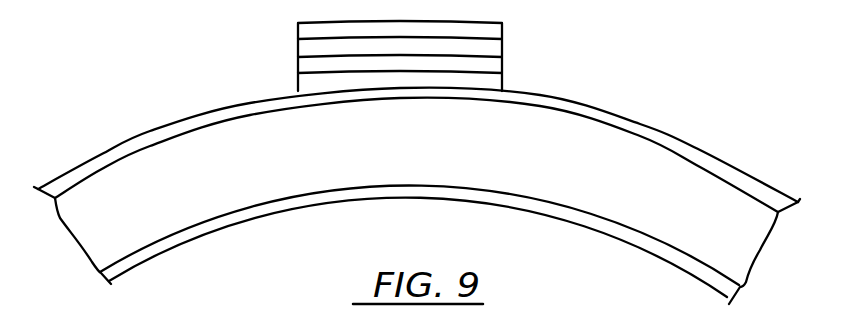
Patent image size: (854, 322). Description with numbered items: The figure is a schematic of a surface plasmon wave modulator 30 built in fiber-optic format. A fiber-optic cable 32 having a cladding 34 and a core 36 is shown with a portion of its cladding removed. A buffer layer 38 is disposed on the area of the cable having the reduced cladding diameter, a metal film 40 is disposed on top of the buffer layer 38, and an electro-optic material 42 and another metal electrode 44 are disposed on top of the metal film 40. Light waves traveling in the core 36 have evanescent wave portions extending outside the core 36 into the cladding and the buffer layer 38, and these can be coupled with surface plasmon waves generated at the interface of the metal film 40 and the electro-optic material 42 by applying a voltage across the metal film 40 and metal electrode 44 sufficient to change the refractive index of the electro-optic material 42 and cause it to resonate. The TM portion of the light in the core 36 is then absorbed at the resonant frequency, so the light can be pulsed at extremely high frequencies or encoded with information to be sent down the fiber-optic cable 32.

The surface plasmon wave modulator 30 is at (417, 157).
The fiber-optic cable 32 is at (168, 123).
The cladding 34 is at (607, 117).
The core 36 is at (658, 154).
The buffer layer 38 is at (502, 75).
The metal film 40 is at (502, 59).
The electro-optic material 42 is at (502, 41).
The metal electrode 44 is at (502, 25).